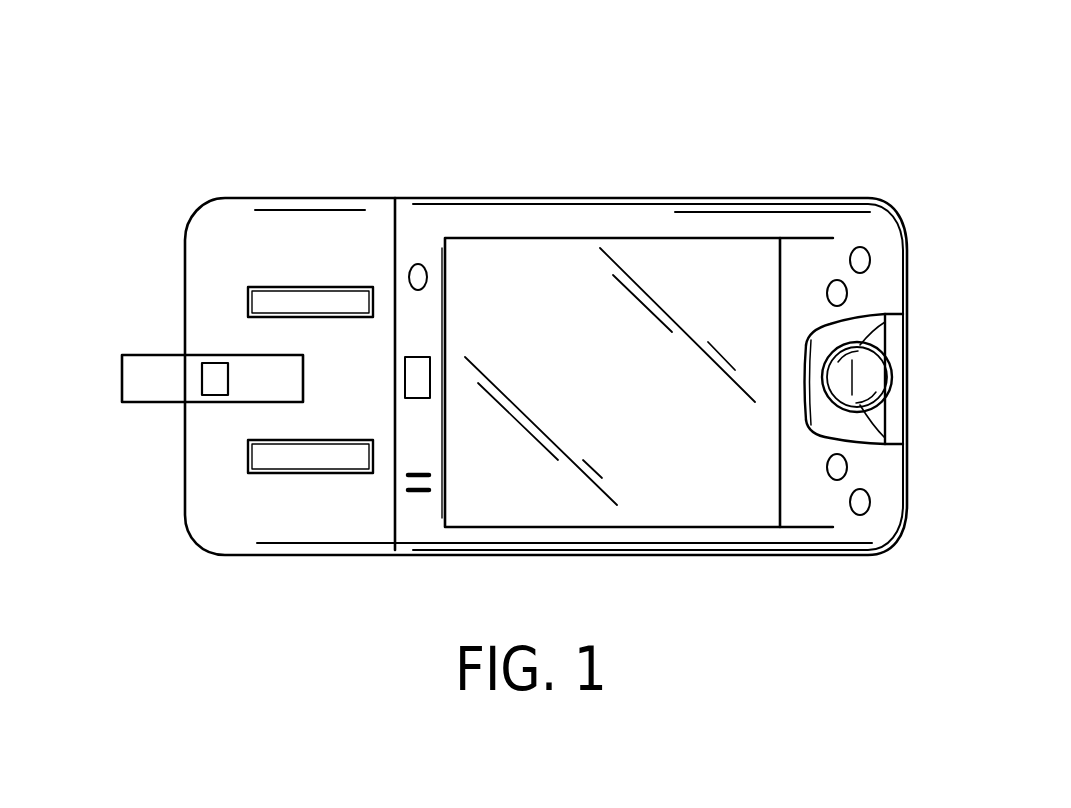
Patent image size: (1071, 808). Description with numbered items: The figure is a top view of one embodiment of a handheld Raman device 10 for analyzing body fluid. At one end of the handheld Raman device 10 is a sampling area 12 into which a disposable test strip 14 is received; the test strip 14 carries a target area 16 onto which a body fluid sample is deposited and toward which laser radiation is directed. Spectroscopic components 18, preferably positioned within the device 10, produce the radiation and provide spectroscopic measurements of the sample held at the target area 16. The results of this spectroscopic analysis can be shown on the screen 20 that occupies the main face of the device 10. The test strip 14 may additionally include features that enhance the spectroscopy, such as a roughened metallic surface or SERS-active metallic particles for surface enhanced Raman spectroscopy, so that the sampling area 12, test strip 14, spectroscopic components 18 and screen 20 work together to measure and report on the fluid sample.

The handheld Raman device 10 is at (667, 128).
The sampling area 12 is at (146, 320).
The test strip 14 is at (122, 380).
The target area 16 is at (206, 380).
The spectroscopic components 18 is at (333, 298).
The screen 20 is at (631, 395).